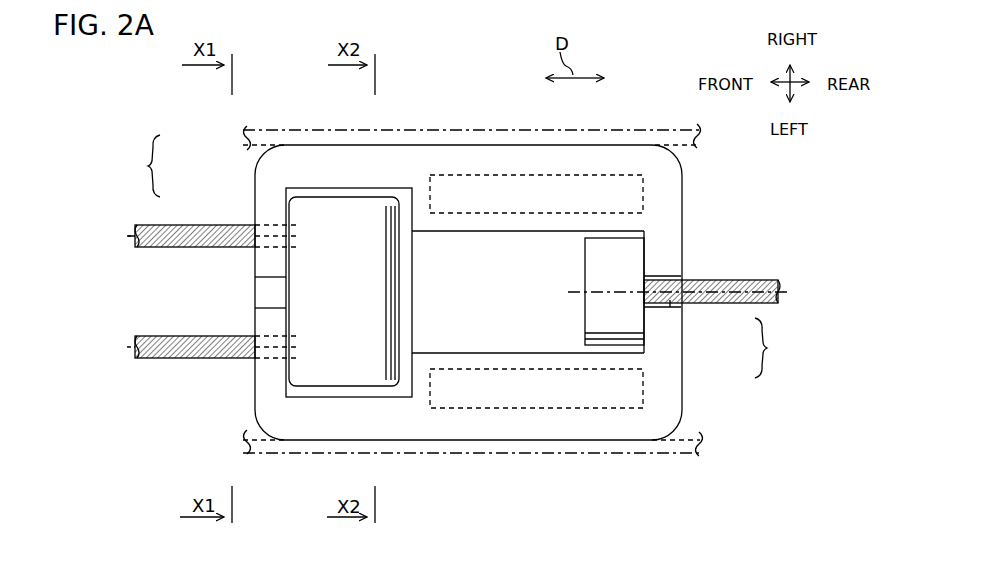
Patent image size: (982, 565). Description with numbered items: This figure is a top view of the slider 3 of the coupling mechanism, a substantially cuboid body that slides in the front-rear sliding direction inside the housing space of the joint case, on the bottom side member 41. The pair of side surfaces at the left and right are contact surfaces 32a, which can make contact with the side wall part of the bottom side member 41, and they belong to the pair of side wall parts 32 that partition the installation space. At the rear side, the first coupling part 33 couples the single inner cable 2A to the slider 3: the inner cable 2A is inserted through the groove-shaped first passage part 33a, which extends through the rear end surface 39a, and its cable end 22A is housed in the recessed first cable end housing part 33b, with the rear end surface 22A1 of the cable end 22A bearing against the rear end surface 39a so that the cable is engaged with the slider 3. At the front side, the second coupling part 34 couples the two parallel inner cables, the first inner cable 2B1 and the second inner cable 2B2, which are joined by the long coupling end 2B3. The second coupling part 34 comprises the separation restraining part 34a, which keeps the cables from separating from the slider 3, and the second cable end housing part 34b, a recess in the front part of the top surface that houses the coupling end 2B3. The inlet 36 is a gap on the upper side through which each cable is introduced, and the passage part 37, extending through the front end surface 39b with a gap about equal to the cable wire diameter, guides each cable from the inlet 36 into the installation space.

The slider 3 is at (636, 125).
The side wall part 32 is at (427, 142).
The contact surface 32a is at (481, 138).
The bottom side member 41 is at (650, 458).
The coupling end 2B3 is at (343, 188).
The second coupling part 34 is at (260, 260).
The separation restraining part 34a is at (247, 216).
The second cable end housing part 34b is at (302, 194).
The passage part 37 is at (275, 285).
The inlet 36 is at (278, 302).
The front end surface 39b is at (253, 333).
The cable end 22A is at (602, 231).
The rear end surface 22A1 is at (646, 249).
The rear end surface 39a is at (683, 238).
The first coupling part 33 is at (689, 310).
The first passage part 33a is at (664, 306).
The first cable end housing part 33b is at (648, 326).
The first inner cable 2B1 is at (201, 248).
The second inner cable 2B2 is at (164, 358).
The inner cable 2A is at (732, 280).